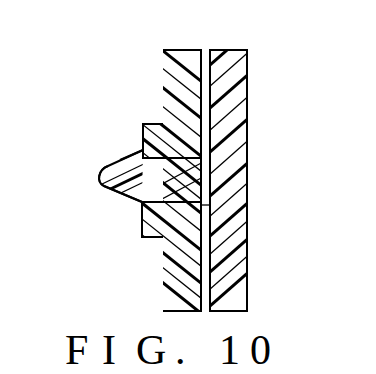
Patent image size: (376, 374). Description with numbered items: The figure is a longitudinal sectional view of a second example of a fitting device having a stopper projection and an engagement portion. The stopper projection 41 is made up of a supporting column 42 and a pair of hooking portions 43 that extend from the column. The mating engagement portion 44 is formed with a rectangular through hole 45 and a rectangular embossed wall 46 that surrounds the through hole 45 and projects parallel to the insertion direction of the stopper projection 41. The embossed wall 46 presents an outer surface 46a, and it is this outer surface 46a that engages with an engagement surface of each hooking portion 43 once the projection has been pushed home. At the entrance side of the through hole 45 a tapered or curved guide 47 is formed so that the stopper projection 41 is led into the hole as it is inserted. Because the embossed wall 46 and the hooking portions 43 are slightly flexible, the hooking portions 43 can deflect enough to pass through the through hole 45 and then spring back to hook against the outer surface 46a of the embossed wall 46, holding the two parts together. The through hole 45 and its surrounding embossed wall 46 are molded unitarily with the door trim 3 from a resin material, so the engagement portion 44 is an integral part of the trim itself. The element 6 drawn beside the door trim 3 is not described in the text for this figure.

The door trim 3 is at (163, 54).
The piston rod 6 is at (247, 66).
The stopper projection 41 is at (95, 175).
The supporting column 42 is at (160, 205).
The hooking portions 43 is at (130, 195).
The engagement portion 44 is at (137, 128).
The through hole 45 is at (150, 180).
The embossed wall 46 is at (160, 122).
The outer surface 46a is at (142, 227).
The tapered or curved guide 47 is at (186, 205).